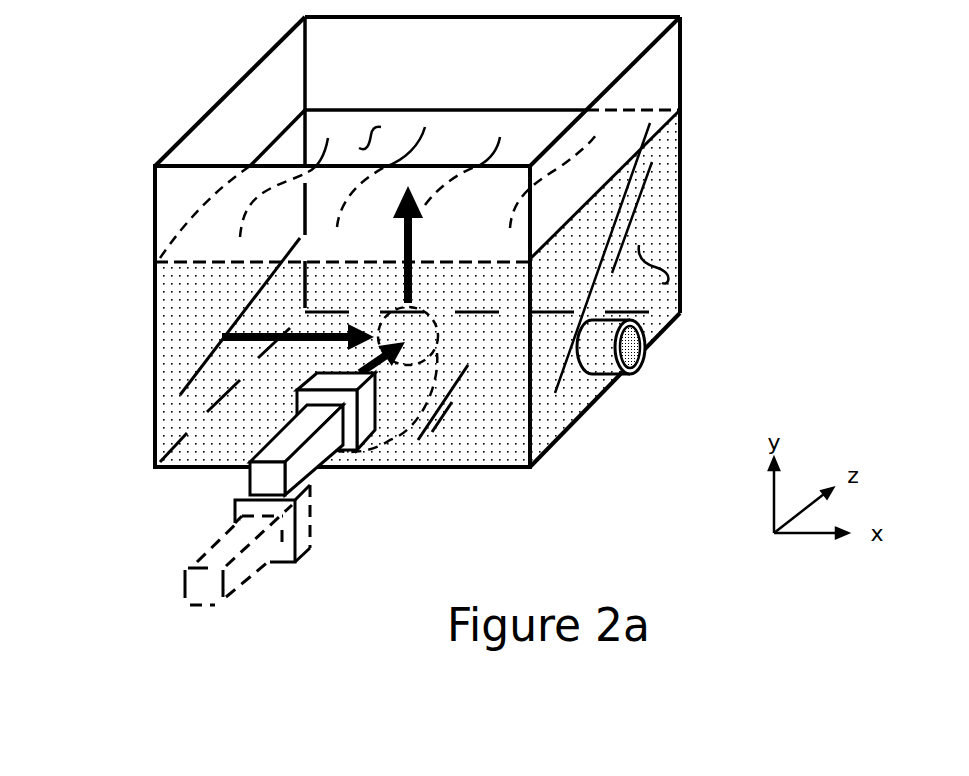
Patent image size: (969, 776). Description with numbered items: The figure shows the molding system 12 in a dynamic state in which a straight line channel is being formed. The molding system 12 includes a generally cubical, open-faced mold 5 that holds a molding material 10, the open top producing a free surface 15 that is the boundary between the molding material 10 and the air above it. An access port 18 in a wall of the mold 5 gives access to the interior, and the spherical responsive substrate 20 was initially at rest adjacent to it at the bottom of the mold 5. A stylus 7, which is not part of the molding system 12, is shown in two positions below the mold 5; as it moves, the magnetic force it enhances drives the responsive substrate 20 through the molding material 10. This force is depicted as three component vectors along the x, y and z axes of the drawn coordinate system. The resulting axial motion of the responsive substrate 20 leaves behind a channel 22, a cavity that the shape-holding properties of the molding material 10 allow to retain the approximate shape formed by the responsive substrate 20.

The mold 5 is at (378, 242).
The stylus 7 is at (188, 545).
The molding material 10 is at (483, 288).
The molding system 12 is at (680, 242).
The free surface 15 is at (371, 142).
The access port 18 is at (694, 304).
The responsive substrate 20 is at (240, 273).
The channel 22 is at (446, 424).